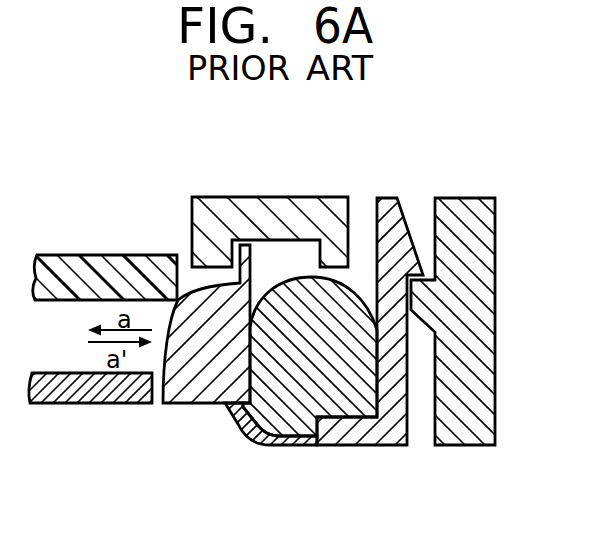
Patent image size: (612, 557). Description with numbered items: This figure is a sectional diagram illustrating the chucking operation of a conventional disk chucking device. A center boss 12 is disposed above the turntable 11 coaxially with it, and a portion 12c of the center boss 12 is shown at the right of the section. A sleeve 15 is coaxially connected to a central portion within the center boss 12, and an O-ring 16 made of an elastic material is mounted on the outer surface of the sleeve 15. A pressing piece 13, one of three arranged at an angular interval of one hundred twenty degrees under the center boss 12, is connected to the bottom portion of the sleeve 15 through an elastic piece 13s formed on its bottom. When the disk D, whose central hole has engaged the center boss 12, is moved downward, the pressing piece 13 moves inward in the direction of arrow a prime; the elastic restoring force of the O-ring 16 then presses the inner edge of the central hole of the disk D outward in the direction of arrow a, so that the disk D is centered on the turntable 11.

The turntable 11 is at (82, 405).
The center boss 12 is at (252, 205).
The chassis post 12c is at (471, 437).
The pressing piece 13 is at (190, 385).
The elastic piece 13s is at (247, 438).
The sleeve 15 is at (373, 437).
The O-ring 16 is at (283, 432).
The disk D is at (83, 265).